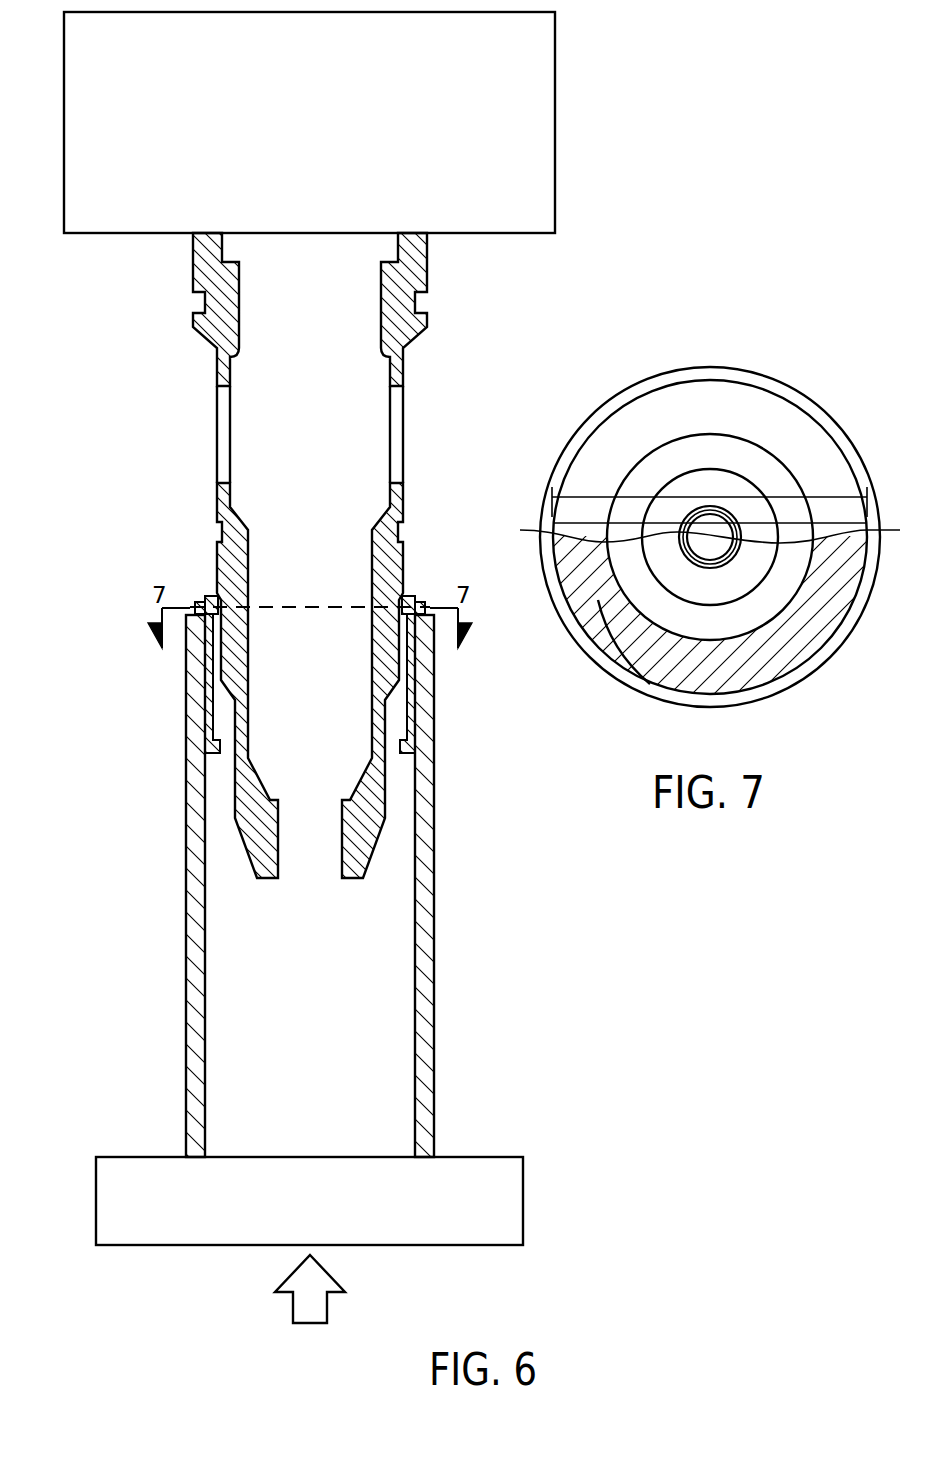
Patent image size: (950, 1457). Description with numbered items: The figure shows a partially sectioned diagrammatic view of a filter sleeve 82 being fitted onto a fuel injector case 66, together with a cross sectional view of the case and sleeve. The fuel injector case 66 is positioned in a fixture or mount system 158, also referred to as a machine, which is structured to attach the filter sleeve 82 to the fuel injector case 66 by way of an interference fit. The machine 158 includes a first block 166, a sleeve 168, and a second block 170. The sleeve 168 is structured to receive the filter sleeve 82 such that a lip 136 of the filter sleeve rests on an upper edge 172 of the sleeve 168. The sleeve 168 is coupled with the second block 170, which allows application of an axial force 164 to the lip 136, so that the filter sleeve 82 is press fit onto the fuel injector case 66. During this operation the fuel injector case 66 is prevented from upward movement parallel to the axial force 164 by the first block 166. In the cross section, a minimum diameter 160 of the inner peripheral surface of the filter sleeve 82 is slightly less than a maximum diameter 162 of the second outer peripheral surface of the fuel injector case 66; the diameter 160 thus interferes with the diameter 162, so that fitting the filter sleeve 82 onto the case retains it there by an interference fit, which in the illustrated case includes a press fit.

In FIG. 6, the fixture or mount system 158 is at (257, 539).
In FIG. 6, the first block 166 is at (556, 95).
In FIG. 6, the fuel injector case 66 is at (428, 274).
In FIG. 7, the fuel injector case 66 is at (842, 606).
In FIG. 6, the upper edge 172 is at (424, 609).
In FIG. 6, the filter sleeve 82 is at (418, 697).
In FIG. 7, the filter sleeve 82 is at (838, 427).
In FIG. 6, the sleeve 168 is at (434, 895).
In FIG. 6, the second block 170 is at (524, 1183).
In FIG. 6, the axial force 164 is at (328, 1299).
In FIG. 7, the minimum diameter 160 is at (832, 522).
In FIG. 7, the maximum diameter 162 is at (601, 496).
In FIG. 7, the lip 136 is at (613, 679).